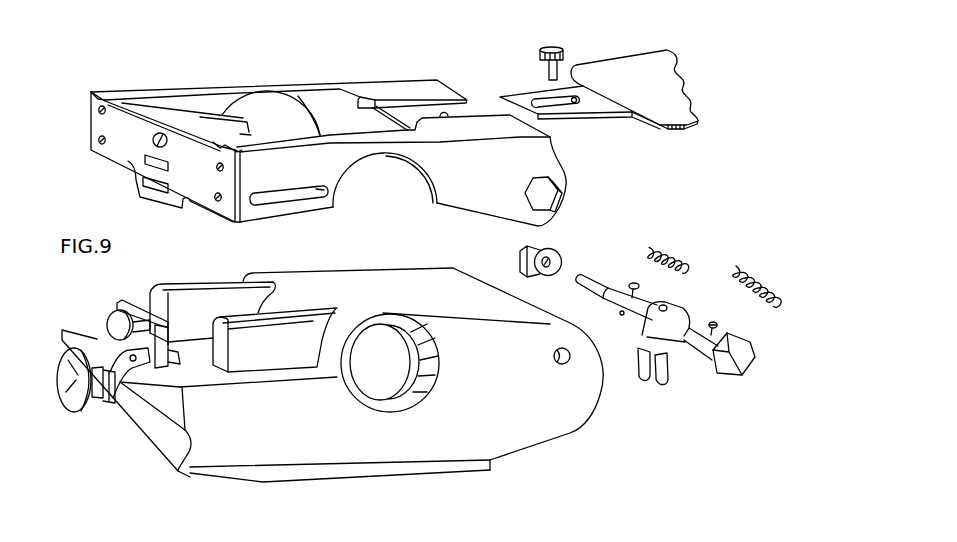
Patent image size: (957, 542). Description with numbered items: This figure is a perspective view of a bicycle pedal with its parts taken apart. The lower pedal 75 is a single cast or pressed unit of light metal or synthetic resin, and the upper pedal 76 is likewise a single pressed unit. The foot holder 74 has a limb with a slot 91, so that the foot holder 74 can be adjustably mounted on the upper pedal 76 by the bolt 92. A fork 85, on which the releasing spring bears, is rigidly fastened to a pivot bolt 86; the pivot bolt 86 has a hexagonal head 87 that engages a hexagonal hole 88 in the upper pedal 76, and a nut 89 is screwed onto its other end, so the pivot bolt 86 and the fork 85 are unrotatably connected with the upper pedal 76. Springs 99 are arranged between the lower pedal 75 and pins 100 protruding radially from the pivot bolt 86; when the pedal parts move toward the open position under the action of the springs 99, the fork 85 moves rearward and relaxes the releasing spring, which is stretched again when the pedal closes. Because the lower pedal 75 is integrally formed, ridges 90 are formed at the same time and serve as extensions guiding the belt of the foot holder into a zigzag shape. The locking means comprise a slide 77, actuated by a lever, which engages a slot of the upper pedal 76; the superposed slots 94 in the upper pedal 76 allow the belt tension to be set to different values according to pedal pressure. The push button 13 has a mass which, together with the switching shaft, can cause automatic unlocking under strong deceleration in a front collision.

The push button 13 is at (78, 403).
The foot holder 74 is at (622, 62).
The lower pedal 75 is at (323, 420).
The upper pedal 76 is at (167, 92).
The slide 77 is at (168, 368).
The fork 85 is at (668, 368).
The pivot bolt 86 is at (708, 322).
The hexagonal head 87 is at (740, 334).
The hexagonal hole 88 is at (570, 200).
The nut 89 is at (552, 250).
The ridges 90 is at (243, 318).
The slot 91 is at (577, 107).
The bolt 92 is at (562, 50).
The slots 94 is at (156, 172).
The springs 99 is at (733, 268).
The pins 100 is at (642, 351).